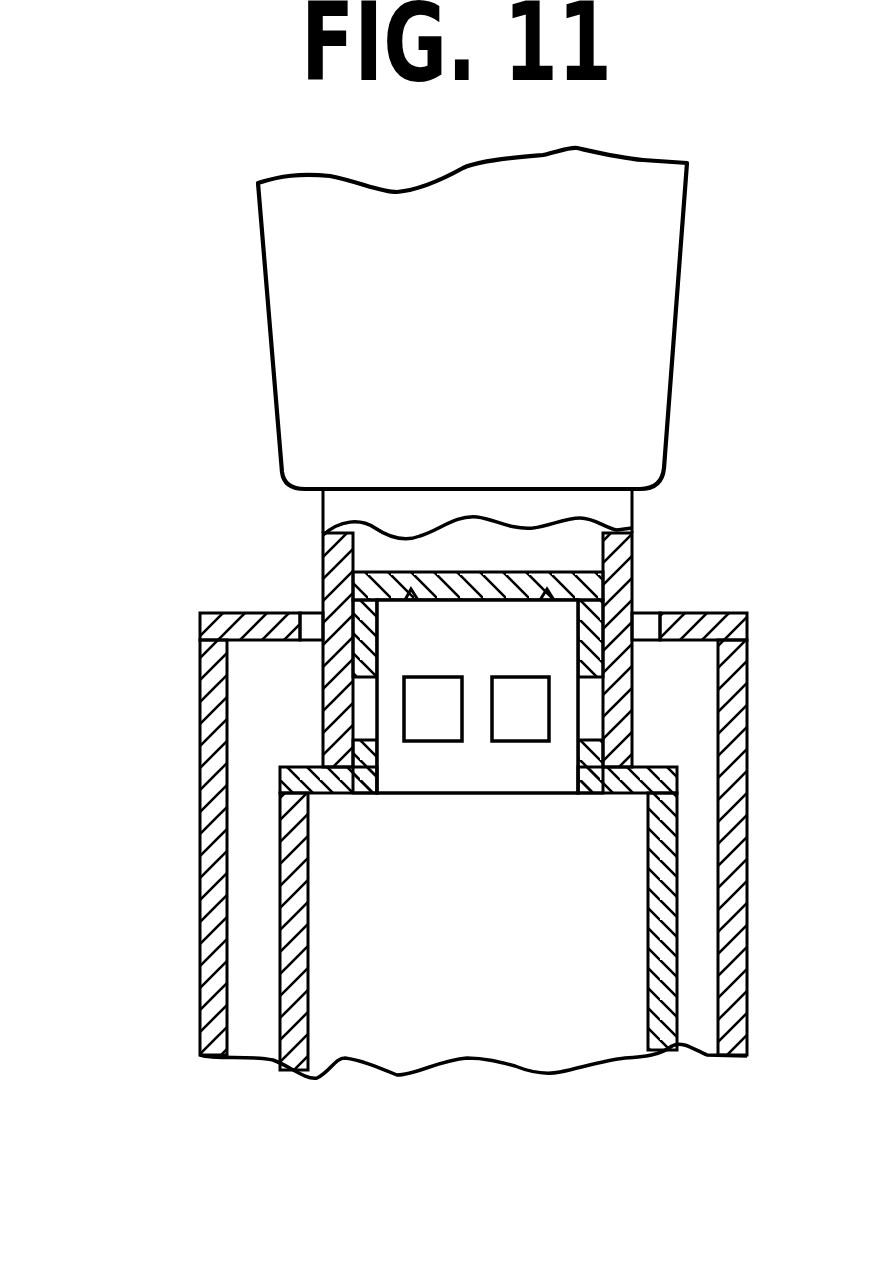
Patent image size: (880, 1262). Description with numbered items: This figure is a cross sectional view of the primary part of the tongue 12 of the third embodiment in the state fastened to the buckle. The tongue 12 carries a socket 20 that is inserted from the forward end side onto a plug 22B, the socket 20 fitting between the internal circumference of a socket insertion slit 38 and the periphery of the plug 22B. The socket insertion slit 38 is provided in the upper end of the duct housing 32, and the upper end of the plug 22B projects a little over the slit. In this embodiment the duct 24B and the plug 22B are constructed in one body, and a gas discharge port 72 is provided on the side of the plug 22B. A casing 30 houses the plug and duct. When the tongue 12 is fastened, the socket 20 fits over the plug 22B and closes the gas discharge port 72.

The tongue 12 is at (248, 325).
The socket 20 is at (323, 570).
The plug 22B is at (380, 642).
The duct 24B is at (280, 1020).
The casing 30 is at (382, 845).
The duct housing 32 is at (215, 965).
The socket insertion slit 38 is at (642, 627).
The gas discharge port 72 is at (508, 713).